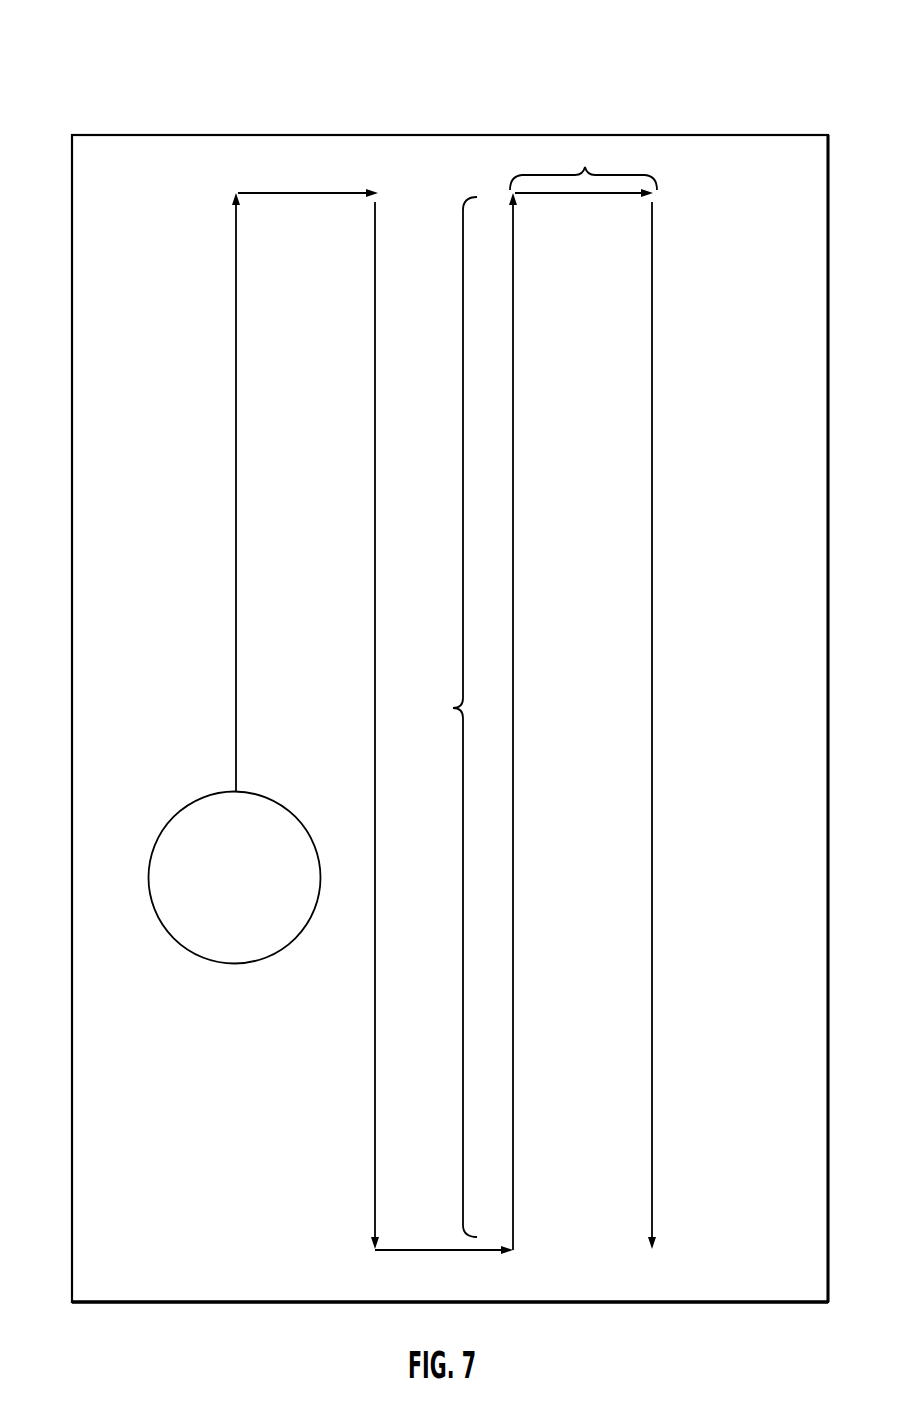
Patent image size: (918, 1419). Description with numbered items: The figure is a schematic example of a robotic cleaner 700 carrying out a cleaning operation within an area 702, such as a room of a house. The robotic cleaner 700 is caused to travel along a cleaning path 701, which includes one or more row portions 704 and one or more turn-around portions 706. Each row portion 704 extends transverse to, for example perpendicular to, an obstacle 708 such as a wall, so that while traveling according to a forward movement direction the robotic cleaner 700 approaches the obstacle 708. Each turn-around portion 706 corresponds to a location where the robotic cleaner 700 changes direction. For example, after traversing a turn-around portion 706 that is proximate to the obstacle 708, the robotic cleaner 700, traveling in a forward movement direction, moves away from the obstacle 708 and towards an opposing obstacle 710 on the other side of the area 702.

The robotic cleaner 700 is at (222, 965).
The cleaning path 701 is at (180, 250).
The area 702 is at (90, 78).
The row portion 704 is at (453, 708).
The turn-around portion 706 is at (585, 167).
The obstacle 708 is at (330, 135).
The opposing obstacle 710 is at (250, 1302).